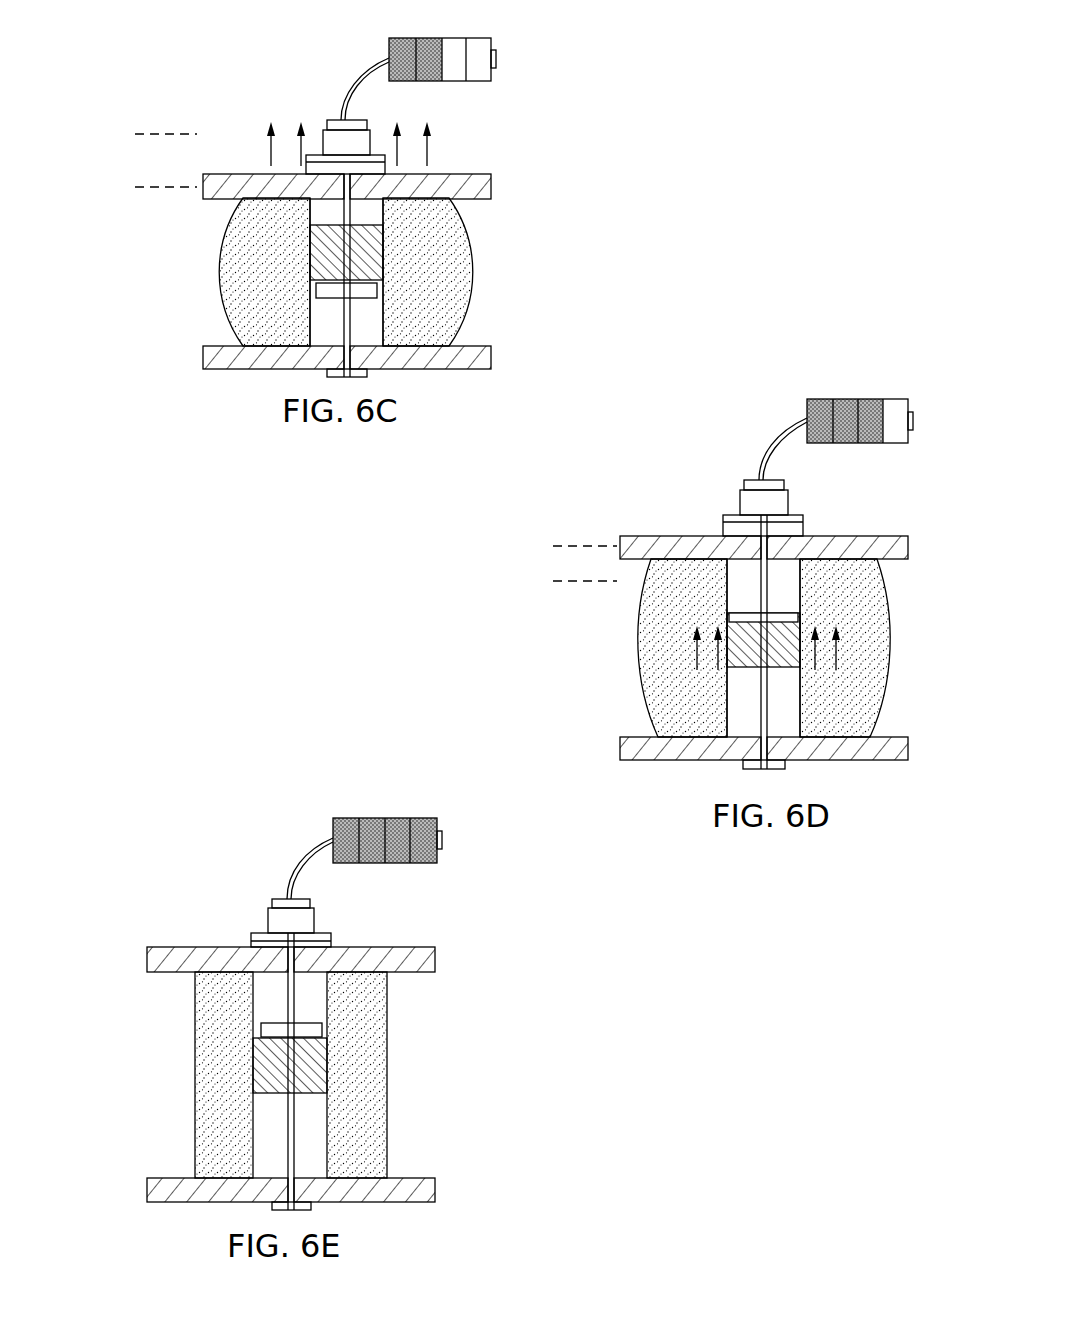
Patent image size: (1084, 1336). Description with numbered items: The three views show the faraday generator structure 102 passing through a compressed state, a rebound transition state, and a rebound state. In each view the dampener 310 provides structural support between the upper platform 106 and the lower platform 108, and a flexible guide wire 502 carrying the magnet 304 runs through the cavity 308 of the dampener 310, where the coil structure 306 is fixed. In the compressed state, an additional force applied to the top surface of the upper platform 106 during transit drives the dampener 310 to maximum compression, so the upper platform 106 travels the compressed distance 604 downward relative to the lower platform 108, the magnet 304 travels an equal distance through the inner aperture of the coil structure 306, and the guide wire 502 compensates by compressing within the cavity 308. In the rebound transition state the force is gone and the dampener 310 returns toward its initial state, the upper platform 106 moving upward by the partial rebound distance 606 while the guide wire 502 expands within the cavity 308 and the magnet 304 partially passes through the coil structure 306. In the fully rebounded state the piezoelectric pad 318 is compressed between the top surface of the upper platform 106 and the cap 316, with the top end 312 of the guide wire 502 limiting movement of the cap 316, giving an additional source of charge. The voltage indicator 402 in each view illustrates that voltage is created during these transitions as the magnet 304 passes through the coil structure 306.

In FIG. 6E, the faraday generator structure 102 is at (152, 871).
In FIG. 6C, the upper platform 106 is at (213, 199).
In FIG. 6D, the upper platform 106 is at (640, 535).
In FIG. 6E, the upper platform 106 is at (147, 958).
In FIG. 6C, the lower platform 108 is at (203, 352).
In FIG. 6D, the lower platform 108 is at (620, 745).
In FIG. 6E, the lower platform 108 is at (147, 1186).
In FIG. 6C, the magnet 304 is at (377, 290).
In FIG. 6D, the magnet 304 is at (798, 620).
In FIG. 6E, the magnet 304 is at (322, 1032).
In FIG. 6C, the coil structure 306 is at (373, 252).
In FIG. 6D, the coil structure 306 is at (780, 657).
In FIG. 6E, the coil structure 306 is at (327, 1067).
In FIG. 6C, the cavity 308 is at (310, 289).
In FIG. 6D, the cavity 308 is at (727, 703).
In FIG. 6C, the dampener 310 is at (222, 255).
In FIG. 6D, the dampener 310 is at (638, 641).
In FIG. 6E, the dampener 310 is at (195, 1058).
In FIG. 6E, the top end 312 is at (280, 898).
In FIG. 6E, the cap 316 is at (316, 922).
In FIG. 6E, the piezoelectric pad 318 is at (331, 945).
In FIG. 6C, the voltage indicator 402 is at (489, 38).
In FIG. 6D, the voltage indicator 402 is at (905, 399).
In FIG. 6E, the voltage indicator 402 is at (433, 818).
In FIG. 6C, the guide wire 502 is at (350, 334).
In FIG. 6D, the guide wire 502 is at (767, 585).
In FIG. 6E, the guide wire 502 is at (294, 1133).
In FIG. 6C, the compressed distance 604 is at (146, 160).
In FIG. 6D, the partial rebound distance 606 is at (560, 565).